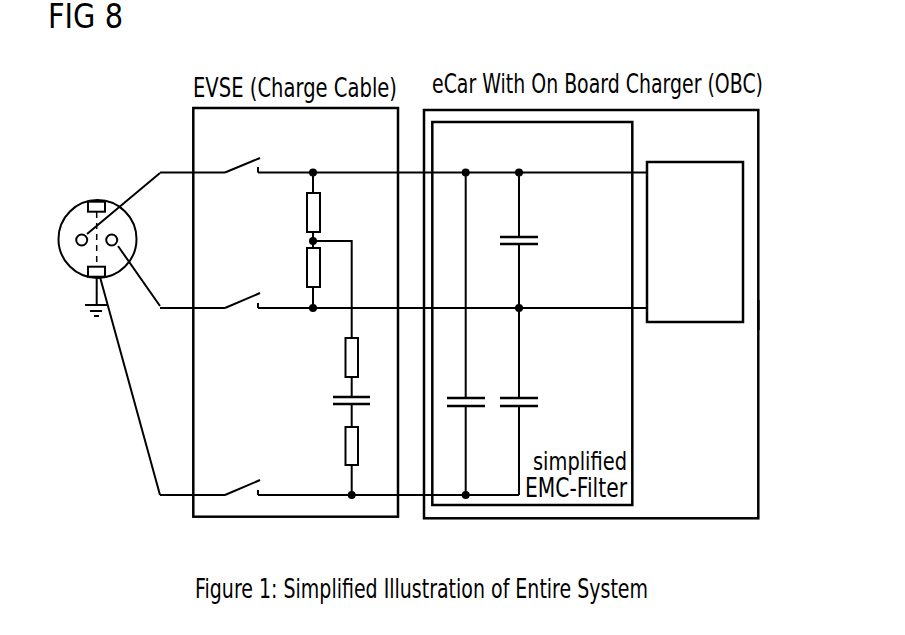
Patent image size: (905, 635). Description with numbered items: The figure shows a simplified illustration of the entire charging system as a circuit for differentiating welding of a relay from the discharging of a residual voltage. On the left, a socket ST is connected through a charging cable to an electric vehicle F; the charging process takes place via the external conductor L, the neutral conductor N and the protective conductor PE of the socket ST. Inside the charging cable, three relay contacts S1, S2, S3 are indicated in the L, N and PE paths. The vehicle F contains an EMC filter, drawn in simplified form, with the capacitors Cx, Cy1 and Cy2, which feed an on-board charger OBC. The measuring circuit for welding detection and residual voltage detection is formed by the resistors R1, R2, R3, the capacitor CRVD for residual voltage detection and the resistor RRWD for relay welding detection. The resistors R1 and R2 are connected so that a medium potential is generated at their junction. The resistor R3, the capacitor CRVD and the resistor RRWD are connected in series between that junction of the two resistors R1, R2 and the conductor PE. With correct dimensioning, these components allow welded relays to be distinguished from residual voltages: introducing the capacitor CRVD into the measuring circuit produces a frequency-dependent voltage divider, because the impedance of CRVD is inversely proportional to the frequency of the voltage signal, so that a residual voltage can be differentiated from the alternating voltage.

The socket ST is at (75, 215).
The protective conductor PE is at (89, 243).
The external conductor L is at (76, 245).
The neutral conductor N is at (120, 244).
The relay contact S1 is at (245, 162).
The relay contact S2 is at (245, 298).
The relay contact S3 is at (245, 486).
The resistor R1 is at (307, 213).
The resistor R2 is at (307, 270).
The resistor R3 is at (345, 357).
The capacitor for residual voltage detection CRVD is at (333, 403).
The resistor for relay welding detection RRWD is at (345, 447).
The capacitor of the EMC filter Cx is at (538, 243).
The capacitor of the EMC filter Cy1 is at (475, 396).
The capacitor of the EMC filter Cy2 is at (538, 402).
The on-board charger OBC is at (695, 242).
The electric vehicle F is at (760, 317).